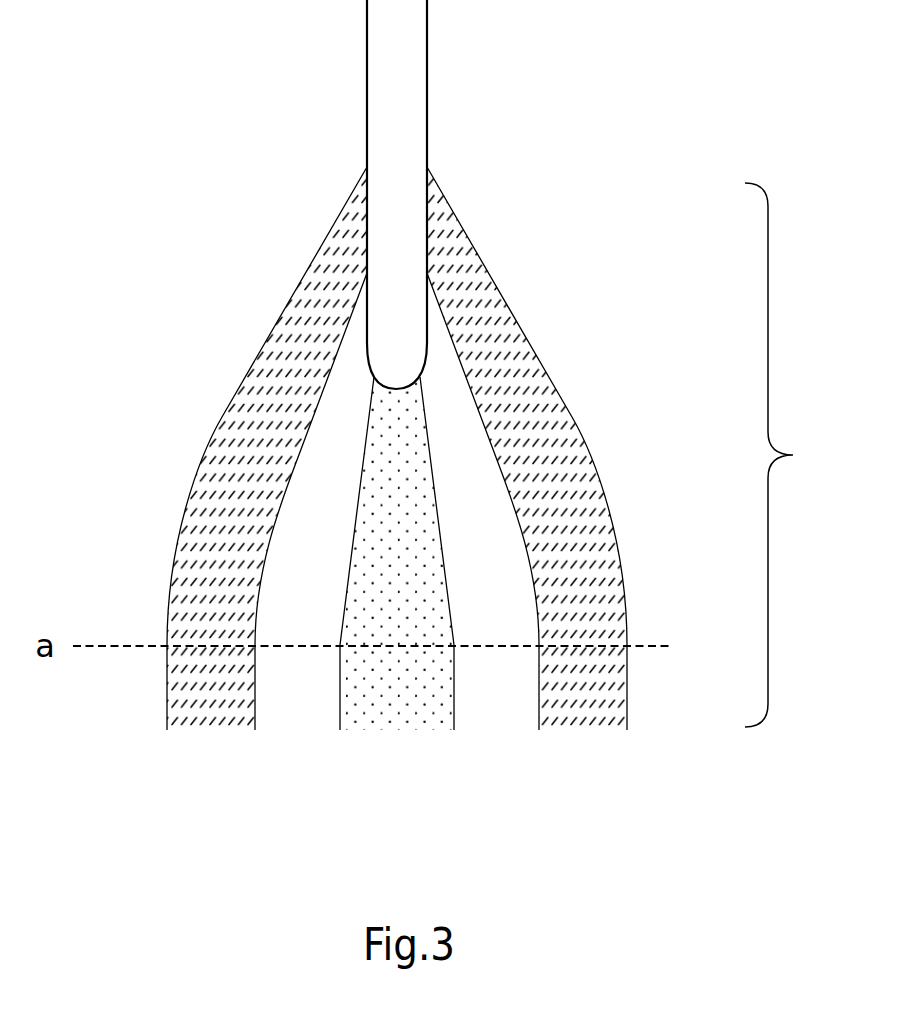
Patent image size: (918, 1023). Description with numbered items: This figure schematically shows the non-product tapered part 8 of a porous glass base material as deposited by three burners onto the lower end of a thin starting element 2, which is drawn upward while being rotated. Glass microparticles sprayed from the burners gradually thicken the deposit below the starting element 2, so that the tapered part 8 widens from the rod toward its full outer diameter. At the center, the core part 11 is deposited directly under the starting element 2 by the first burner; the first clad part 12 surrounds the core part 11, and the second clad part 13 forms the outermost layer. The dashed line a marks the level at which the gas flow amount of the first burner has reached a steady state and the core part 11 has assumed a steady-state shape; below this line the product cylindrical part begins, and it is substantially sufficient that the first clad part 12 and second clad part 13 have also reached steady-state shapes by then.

The starting element 2 is at (414, 85).
The non-product tapered part 8 is at (789, 455).
The core part 11 is at (407, 707).
The first clad part 12 is at (502, 709).
The second clad part 13 is at (587, 713).